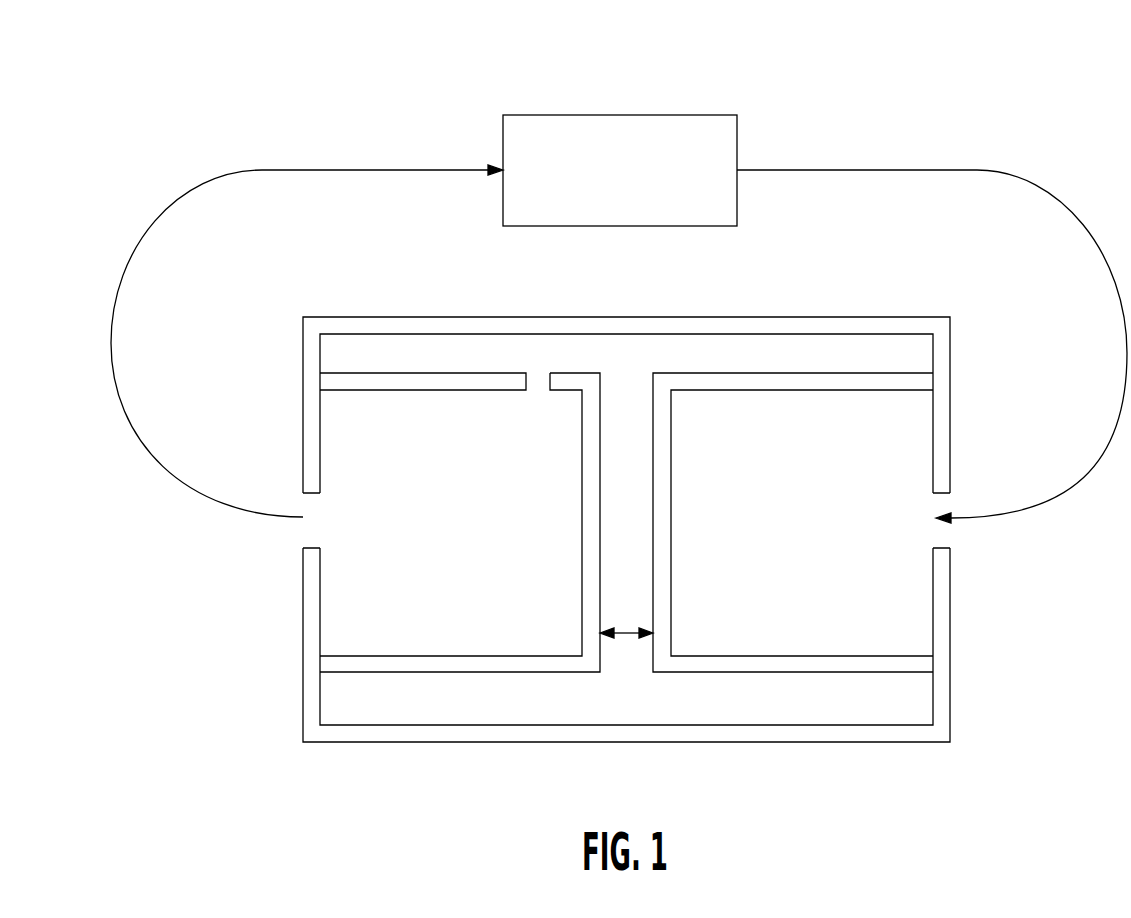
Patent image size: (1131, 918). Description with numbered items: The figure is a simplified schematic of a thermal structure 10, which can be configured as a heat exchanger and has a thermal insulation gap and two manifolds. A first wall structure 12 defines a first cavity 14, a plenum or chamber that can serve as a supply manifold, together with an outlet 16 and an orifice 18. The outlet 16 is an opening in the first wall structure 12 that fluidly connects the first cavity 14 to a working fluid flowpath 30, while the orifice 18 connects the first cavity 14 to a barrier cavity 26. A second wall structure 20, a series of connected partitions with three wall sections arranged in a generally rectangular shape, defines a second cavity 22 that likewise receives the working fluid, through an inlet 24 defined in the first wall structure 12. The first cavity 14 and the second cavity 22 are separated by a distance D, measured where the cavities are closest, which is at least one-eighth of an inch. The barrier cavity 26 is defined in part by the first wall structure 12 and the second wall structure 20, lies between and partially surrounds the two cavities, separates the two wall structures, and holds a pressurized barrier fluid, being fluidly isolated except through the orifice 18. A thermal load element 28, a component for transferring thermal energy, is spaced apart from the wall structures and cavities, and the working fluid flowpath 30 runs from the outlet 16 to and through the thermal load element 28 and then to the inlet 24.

The thermal structure 10 is at (914, 104).
The first wall structure 12 is at (405, 673).
The first cavity 14 is at (460, 532).
The outlet 16 is at (310, 550).
The orifice 18 is at (550, 378).
The second wall structure 20 is at (787, 673).
The second cavity 22 is at (820, 534).
The inlet 24 is at (943, 498).
The barrier cavity 26 is at (642, 374).
The thermal load element 28 is at (633, 113).
The working fluid flowpath 30 is at (243, 172).
The distance D is at (633, 636).